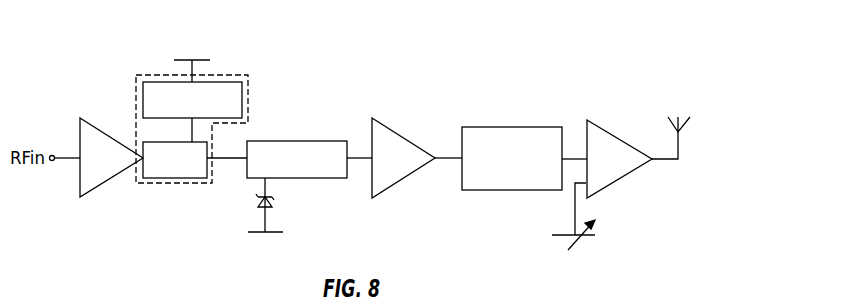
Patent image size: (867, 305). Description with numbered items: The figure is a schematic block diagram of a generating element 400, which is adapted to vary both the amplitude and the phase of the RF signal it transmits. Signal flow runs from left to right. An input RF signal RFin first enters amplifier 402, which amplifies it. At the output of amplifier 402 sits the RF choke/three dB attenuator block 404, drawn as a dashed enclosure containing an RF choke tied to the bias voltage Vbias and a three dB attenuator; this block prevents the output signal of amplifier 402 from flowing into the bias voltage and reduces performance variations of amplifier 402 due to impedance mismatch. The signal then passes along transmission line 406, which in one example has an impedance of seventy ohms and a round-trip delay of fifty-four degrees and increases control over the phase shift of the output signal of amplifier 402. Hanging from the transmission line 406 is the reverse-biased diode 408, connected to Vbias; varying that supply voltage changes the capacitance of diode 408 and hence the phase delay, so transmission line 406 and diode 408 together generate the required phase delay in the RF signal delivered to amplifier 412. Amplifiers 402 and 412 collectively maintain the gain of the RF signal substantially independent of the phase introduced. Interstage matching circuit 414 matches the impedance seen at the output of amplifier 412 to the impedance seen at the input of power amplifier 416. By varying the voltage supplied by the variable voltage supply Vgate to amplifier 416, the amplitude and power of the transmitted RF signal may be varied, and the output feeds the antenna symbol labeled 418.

The generating element 400 is at (643, 37).
The amplifier 402 is at (110, 178).
The RF choke/3 dB attenuator block 404 is at (155, 73).
The transmission line 406 is at (298, 140).
The diode 408 is at (273, 202).
The amplifier 412 is at (407, 135).
The interstage matching circuit 414 is at (513, 125).
The power amplifier 416 is at (625, 137).
The antenna 418 is at (685, 128).